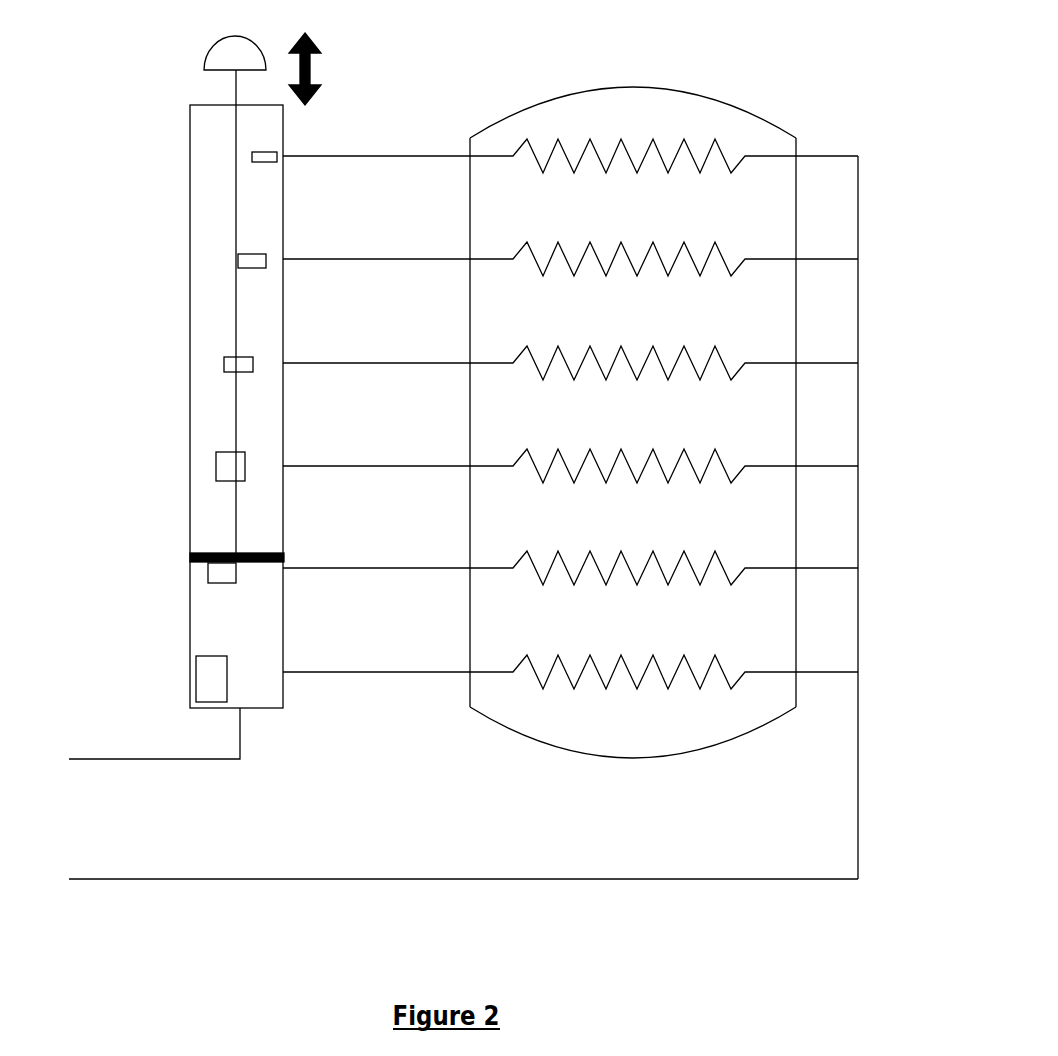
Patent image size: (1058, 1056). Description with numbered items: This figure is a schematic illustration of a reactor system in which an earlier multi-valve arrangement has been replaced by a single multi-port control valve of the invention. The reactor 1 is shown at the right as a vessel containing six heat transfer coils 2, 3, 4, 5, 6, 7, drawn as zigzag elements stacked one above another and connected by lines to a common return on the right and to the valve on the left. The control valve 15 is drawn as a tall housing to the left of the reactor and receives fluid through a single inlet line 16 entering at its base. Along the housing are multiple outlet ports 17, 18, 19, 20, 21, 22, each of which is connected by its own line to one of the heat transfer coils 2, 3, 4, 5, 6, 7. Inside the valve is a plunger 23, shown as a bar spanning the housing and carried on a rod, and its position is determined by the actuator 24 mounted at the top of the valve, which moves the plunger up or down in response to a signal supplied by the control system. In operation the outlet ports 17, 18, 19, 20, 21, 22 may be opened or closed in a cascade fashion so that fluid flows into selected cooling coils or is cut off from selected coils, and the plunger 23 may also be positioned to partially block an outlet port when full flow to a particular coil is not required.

The reactor 1 is at (668, 86).
The heat transfer coil 2 is at (724, 146).
The heat transfer coil 3 is at (724, 249).
The heat transfer coil 4 is at (724, 352).
The heat transfer coil 5 is at (724, 455).
The heat transfer coil 6 is at (724, 557).
The heat transfer coil 7 is at (724, 661).
The control valve 15 is at (186, 200).
The inlet line 16 is at (93, 752).
The outlet port 17 is at (270, 170).
The outlet port 18 is at (265, 275).
The outlet port 19 is at (250, 378).
The outlet port 20 is at (250, 483).
The outlet port 21 is at (243, 586).
The outlet port 22 is at (237, 680).
The plunger 23 is at (212, 550).
The actuator 24 is at (200, 52).